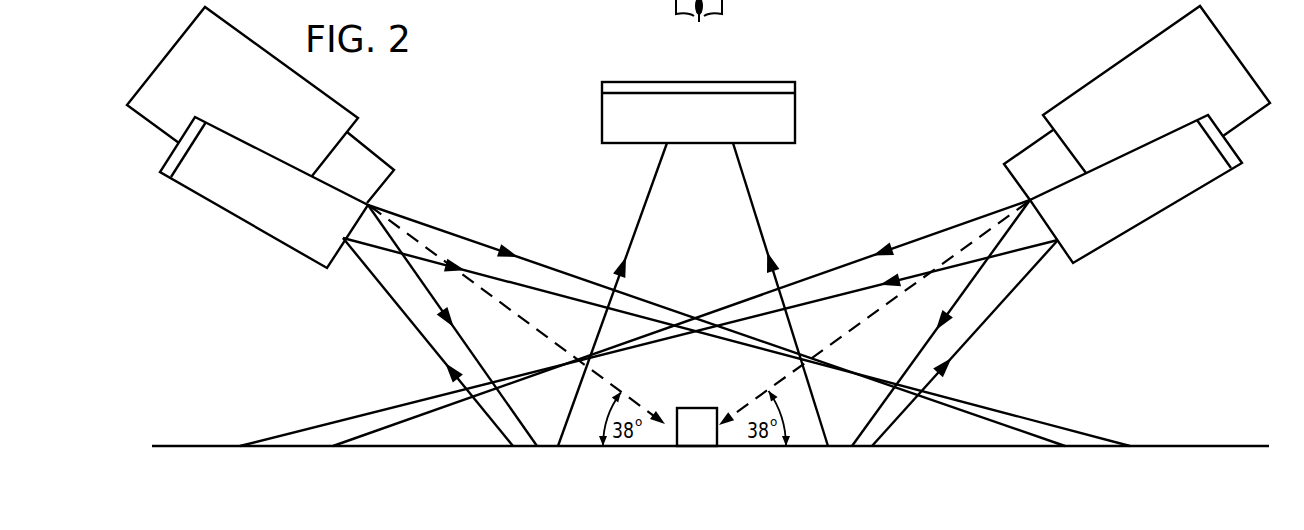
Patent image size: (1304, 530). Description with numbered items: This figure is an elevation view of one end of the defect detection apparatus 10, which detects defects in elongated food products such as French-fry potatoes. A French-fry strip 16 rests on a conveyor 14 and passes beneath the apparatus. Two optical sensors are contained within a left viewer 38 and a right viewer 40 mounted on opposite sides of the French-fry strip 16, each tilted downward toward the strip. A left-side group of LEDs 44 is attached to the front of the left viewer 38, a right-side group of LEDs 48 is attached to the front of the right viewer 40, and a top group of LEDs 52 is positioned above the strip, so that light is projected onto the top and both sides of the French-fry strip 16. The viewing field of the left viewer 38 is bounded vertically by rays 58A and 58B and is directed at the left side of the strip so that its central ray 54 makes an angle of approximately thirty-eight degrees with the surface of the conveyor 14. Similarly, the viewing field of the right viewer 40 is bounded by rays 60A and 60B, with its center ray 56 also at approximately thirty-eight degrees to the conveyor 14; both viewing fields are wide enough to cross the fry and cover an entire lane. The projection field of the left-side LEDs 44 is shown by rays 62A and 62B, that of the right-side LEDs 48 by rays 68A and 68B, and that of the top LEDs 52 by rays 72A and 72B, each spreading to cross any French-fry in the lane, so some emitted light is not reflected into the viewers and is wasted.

The defect detection apparatus 10 is at (476, 130).
The conveyor 14 is at (915, 443).
The French-fry strip 16 is at (697, 408).
The left viewer 38 is at (301, 77).
The right viewer 40 is at (1118, 66).
The left-side group of LEDs 44 is at (245, 224).
The right-side group of LEDs 48 is at (1143, 224).
The top group of LEDs 52 is at (602, 122).
The central ray 54 is at (534, 327).
The center ray 56 is at (848, 335).
The ray 58A is at (466, 236).
The ray 58B is at (479, 360).
The ray 60A is at (819, 273).
The ray 60B is at (913, 361).
The projection field ray 62A is at (397, 307).
The projection field ray 62B is at (553, 292).
The projection field ray 68A is at (980, 324).
The projection field ray 68B is at (905, 278).
The projection field ray 72A is at (650, 187).
The projection field ray 72B is at (750, 179).